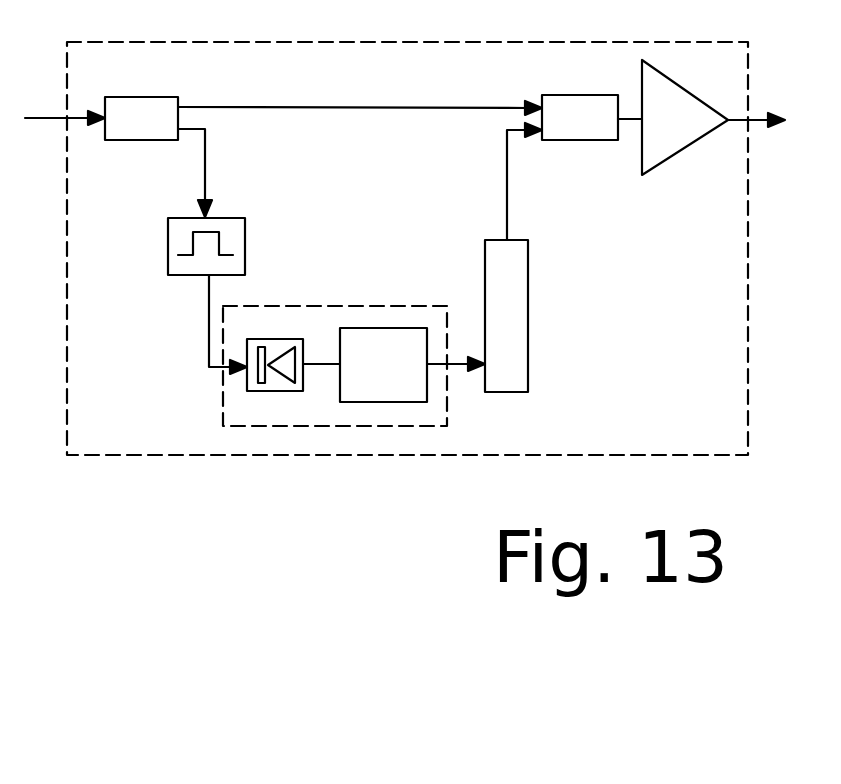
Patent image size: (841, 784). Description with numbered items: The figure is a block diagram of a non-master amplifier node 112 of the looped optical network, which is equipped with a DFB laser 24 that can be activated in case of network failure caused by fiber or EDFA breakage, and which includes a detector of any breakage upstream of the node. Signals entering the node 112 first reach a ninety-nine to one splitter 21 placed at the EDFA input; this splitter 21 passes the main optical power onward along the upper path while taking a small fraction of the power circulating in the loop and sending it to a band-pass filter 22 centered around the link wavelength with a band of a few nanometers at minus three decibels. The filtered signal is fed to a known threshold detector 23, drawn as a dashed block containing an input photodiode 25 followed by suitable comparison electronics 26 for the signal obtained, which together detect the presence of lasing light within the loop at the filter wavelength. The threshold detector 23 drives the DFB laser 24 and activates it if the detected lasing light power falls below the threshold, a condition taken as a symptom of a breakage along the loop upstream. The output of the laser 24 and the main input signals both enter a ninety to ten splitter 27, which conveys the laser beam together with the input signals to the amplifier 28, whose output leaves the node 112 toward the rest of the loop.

The amplifier node 112 is at (417, 42).
The 99/1 splitter 21 is at (148, 140).
The band-pass filter 22 is at (175, 235).
The threshold detector 23 is at (317, 307).
The DFB laser 24 is at (522, 340).
The input photodiode 25 is at (250, 382).
The comparison electronics 26 is at (382, 340).
The 90/10 splitter 27 is at (563, 140).
The amplifier 28 is at (680, 150).